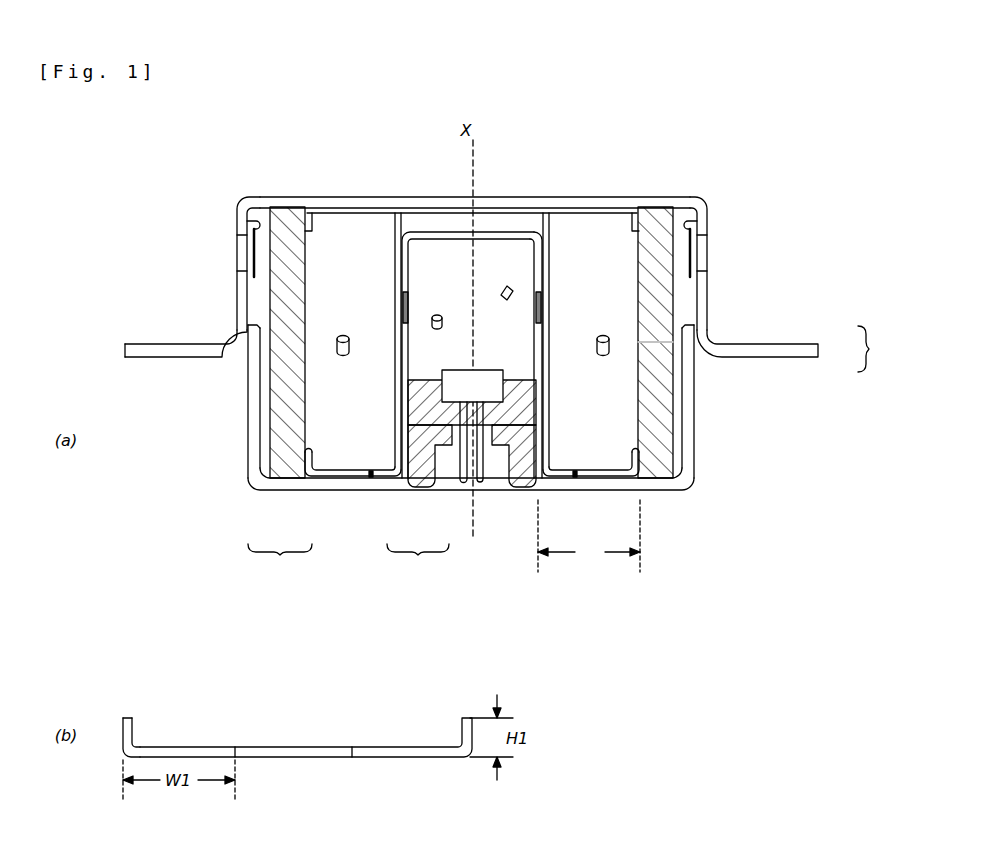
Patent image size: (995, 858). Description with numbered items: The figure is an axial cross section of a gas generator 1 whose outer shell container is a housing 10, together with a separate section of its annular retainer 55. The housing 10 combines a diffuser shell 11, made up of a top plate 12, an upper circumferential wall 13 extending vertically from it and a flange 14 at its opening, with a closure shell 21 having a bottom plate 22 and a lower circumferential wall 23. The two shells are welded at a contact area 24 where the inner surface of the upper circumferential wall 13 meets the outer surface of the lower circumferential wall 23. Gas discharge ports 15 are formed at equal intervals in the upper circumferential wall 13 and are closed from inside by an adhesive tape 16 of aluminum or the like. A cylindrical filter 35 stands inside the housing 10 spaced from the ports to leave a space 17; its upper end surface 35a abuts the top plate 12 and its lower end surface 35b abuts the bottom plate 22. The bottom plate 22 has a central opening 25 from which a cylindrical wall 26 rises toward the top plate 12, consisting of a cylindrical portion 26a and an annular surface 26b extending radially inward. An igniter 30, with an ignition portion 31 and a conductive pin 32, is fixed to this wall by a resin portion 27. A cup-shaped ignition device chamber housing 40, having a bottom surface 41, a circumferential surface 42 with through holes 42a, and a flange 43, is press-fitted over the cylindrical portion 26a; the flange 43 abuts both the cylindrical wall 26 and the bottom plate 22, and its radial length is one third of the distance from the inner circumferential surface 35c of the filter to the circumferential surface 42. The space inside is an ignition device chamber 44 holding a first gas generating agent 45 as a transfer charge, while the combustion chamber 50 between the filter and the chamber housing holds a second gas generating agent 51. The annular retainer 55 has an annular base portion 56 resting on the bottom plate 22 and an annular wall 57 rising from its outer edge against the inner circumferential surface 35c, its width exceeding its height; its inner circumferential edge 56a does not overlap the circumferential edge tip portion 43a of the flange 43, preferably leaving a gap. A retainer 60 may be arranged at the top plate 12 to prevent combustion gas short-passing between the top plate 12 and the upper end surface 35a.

The gas generator 1 is at (486, 465).
The housing 10 is at (486, 339).
The diffuser shell 11 is at (469, 252).
The top plate 12 is at (338, 207).
The upper circumferential wall 13 is at (238, 300).
The flange 14 is at (152, 343).
The gas discharge ports 15 is at (240, 255).
The adhesive tape 16 is at (256, 228).
The space 17 is at (688, 292).
The closure shell 21 is at (518, 427).
The bottom plate 22 is at (590, 486).
The lower circumferential wall 23 is at (249, 448).
The contact area 24 is at (247, 332).
The opening 25 is at (496, 458).
The cylindrical wall 26 is at (459, 503).
The cylindrical portion 26a is at (425, 458).
The annular surface 26b is at (455, 448).
The resin portion 27 is at (412, 397).
The igniter 30 is at (475, 440).
The ignition portion 31 is at (489, 369).
The conductive pin 32 is at (482, 484).
The cylindrical filter 35 is at (520, 344).
The upper end surface 35a is at (662, 228).
The lower end surface 35b is at (660, 478).
The inner circumferential surface 35c is at (308, 407).
The ignition device chamber housing 40 is at (468, 323).
The bottom surface 41 is at (500, 323).
The circumferential surface 42 is at (546, 343).
The through holes 42a is at (541, 302).
The flange 43 is at (472, 387).
The circumferential edge tip portion 43a is at (369, 478).
The ignition device chamber 44 is at (428, 271).
The first gas generating agent 45 is at (436, 315).
The combustion chamber 50 is at (344, 302).
The second gas generating agent 51 is at (603, 336).
The annular retainer 55 is at (381, 619).
The annular base portion 56 is at (342, 474).
The inner circumferential edge 56a is at (237, 749).
The annular wall 57 is at (305, 466).
The retainer 60 is at (563, 217).